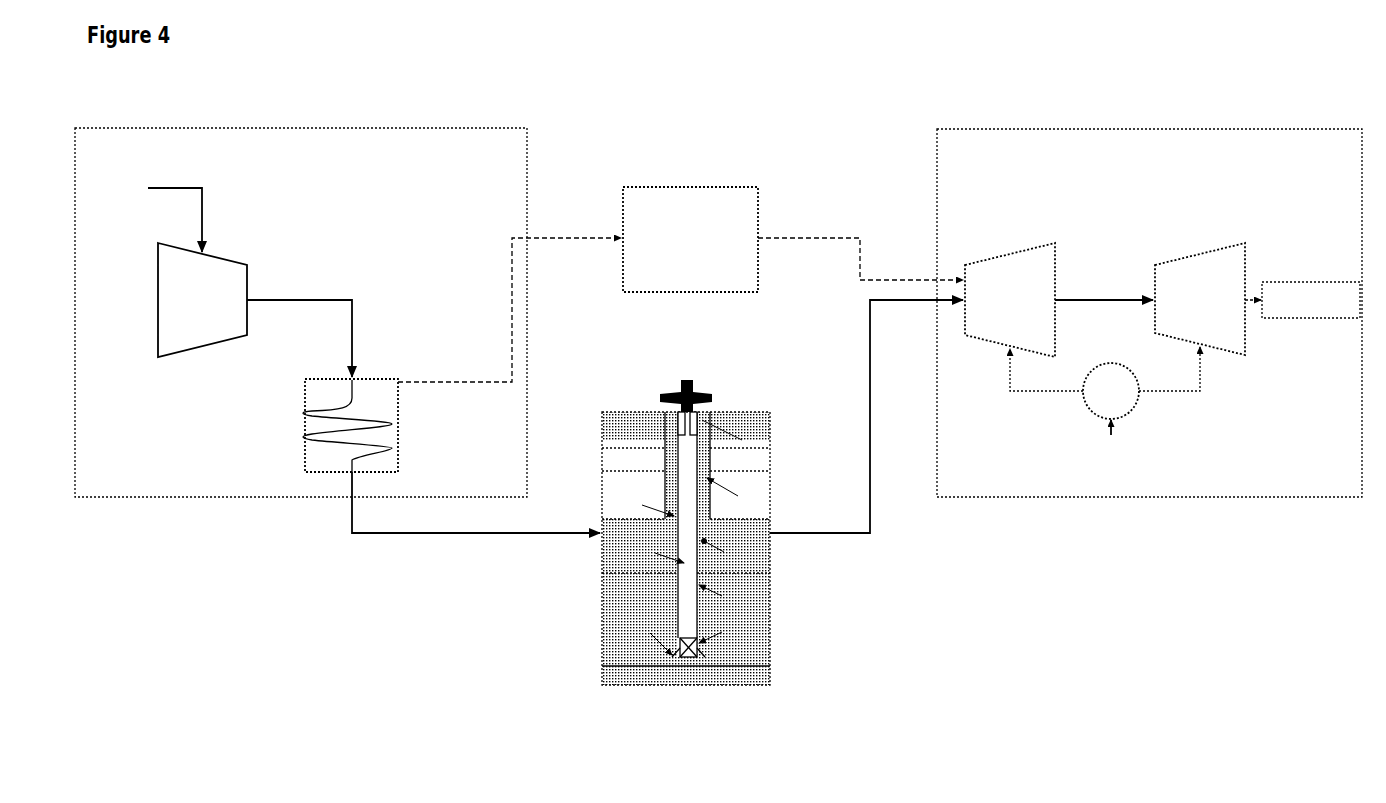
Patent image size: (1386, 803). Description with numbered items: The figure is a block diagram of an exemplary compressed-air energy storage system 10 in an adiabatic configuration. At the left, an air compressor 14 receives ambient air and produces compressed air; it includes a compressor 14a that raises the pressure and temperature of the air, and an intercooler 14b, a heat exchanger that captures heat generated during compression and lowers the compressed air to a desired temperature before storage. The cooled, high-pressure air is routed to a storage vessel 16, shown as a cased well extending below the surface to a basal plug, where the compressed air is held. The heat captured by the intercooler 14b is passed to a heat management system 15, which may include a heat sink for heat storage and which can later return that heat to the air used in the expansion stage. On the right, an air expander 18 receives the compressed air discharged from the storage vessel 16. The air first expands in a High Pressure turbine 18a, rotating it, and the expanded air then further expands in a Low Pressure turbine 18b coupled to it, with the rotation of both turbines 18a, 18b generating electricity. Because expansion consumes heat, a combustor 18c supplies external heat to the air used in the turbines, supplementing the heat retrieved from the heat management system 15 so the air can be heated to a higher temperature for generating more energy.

The CWCAS system 10 is at (912, 46).
The air compressor 14 is at (348, 316).
The compressor 14a is at (180, 300).
The intercooler 14b is at (325, 425).
The heat management system 15 is at (690, 225).
The storage vessel 16 is at (686, 551).
The air expander 18 is at (1149, 298).
The High Pressure (HP) turbine 18a is at (1000, 305).
The Low Pressure (LP) turbine 18b is at (1220, 308).
The combustor 18c is at (1110, 413).